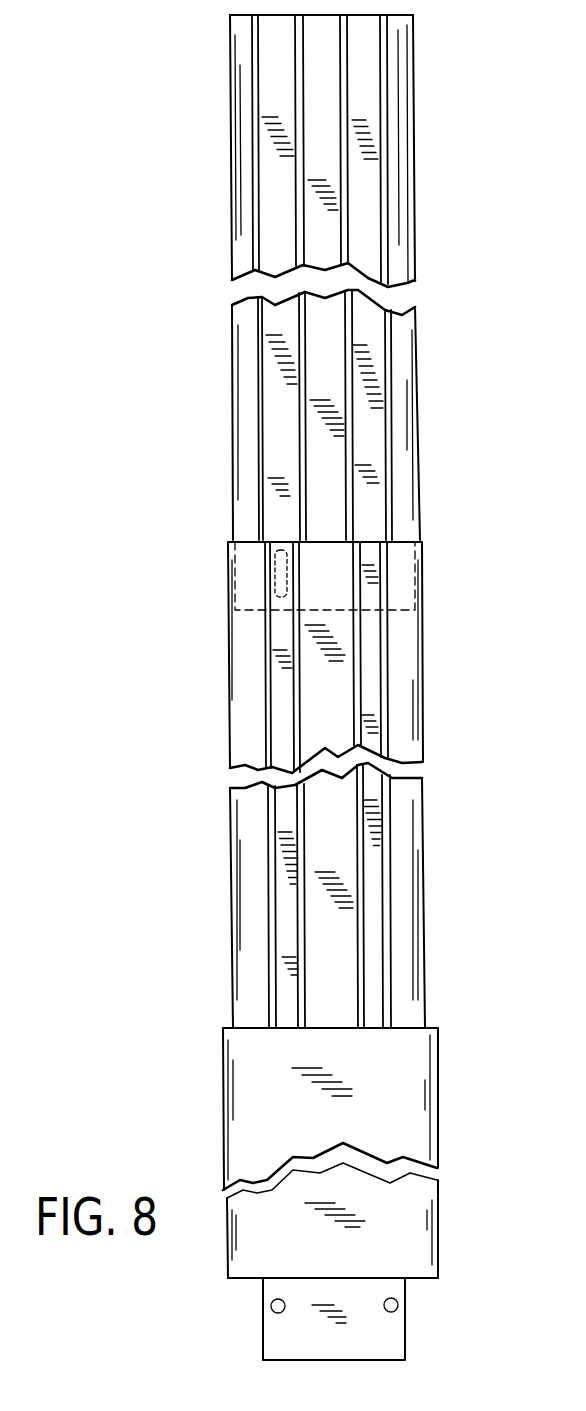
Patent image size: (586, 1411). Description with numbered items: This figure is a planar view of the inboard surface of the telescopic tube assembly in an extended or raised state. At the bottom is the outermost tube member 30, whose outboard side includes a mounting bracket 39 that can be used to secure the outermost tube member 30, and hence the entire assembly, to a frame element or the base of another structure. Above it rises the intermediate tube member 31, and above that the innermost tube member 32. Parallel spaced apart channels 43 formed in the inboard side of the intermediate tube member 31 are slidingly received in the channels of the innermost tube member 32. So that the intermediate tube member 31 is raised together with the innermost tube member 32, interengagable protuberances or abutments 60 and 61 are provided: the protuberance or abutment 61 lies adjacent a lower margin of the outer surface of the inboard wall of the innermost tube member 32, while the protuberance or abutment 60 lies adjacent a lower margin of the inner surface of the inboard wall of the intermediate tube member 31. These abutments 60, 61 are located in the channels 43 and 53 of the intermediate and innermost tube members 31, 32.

The outermost tube member 30 is at (440, 1107).
The intermediate tube member 31 is at (338, 754).
The innermost tube member 32 is at (338, 277).
The mounting bracket 39 is at (387, 1338).
The channels 43 is at (365, 707).
The channels 53 is at (398, 218).
The protuberance or abutment 60 is at (280, 537).
The protuberance or abutment 61 is at (275, 612).